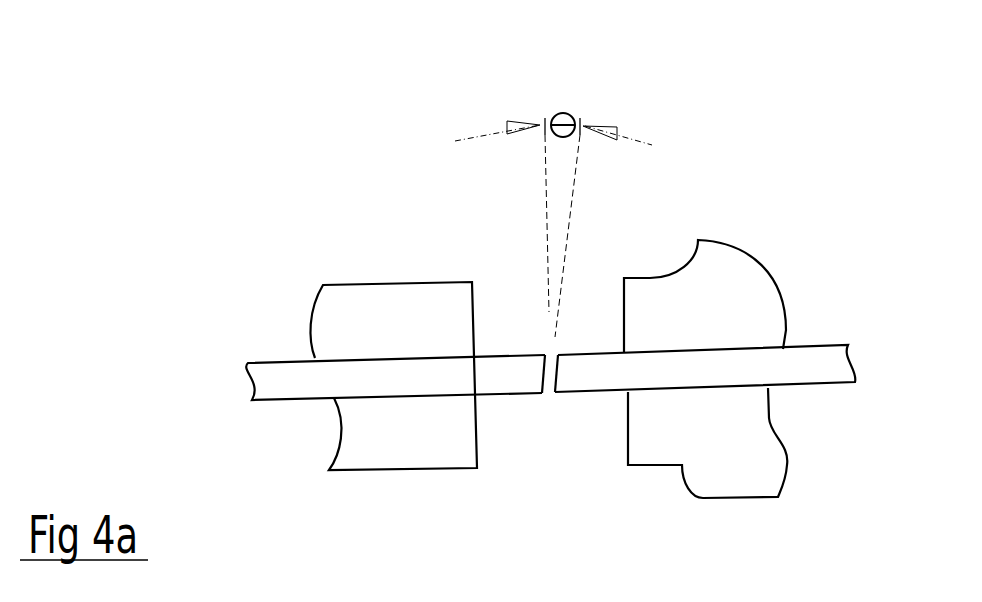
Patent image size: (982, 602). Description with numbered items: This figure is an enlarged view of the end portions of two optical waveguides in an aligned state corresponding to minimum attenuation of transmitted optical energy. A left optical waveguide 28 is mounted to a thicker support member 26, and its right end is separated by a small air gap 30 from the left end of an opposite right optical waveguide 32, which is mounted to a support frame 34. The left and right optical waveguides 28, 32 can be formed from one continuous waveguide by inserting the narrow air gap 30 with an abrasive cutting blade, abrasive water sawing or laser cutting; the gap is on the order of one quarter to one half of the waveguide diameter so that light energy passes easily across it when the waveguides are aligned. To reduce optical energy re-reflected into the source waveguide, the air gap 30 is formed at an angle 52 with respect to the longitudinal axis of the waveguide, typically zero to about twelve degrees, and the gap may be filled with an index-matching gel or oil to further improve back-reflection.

The support member 26 is at (458, 295).
The left optical waveguide 28 is at (272, 360).
The air gap 30 is at (541, 363).
The right optical waveguide 32 is at (812, 345).
The support frame 34 is at (647, 305).
The angle 52 is at (570, 110).